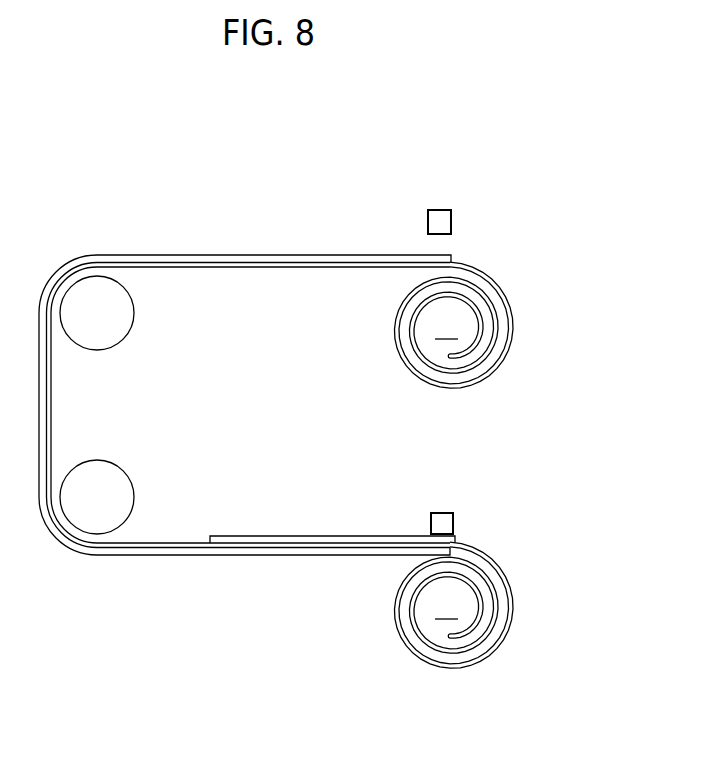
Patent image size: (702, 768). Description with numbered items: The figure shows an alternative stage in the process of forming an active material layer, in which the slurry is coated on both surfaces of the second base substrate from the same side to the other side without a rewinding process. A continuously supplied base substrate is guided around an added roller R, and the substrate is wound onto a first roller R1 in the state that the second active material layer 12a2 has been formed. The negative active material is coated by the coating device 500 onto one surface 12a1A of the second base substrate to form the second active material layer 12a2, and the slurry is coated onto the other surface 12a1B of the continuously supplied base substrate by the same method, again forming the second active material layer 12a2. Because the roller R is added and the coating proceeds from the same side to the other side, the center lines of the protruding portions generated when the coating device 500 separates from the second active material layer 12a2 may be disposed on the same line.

The second active material layer 12a2 is at (210, 268).
The coating device 500 is at (449, 208).
The one surface of the second base substrate 12a1A is at (475, 258).
The other surface of the second base substrate 12a1B is at (492, 552).
The roller R is at (97, 405).
The first roller R1 is at (446, 463).